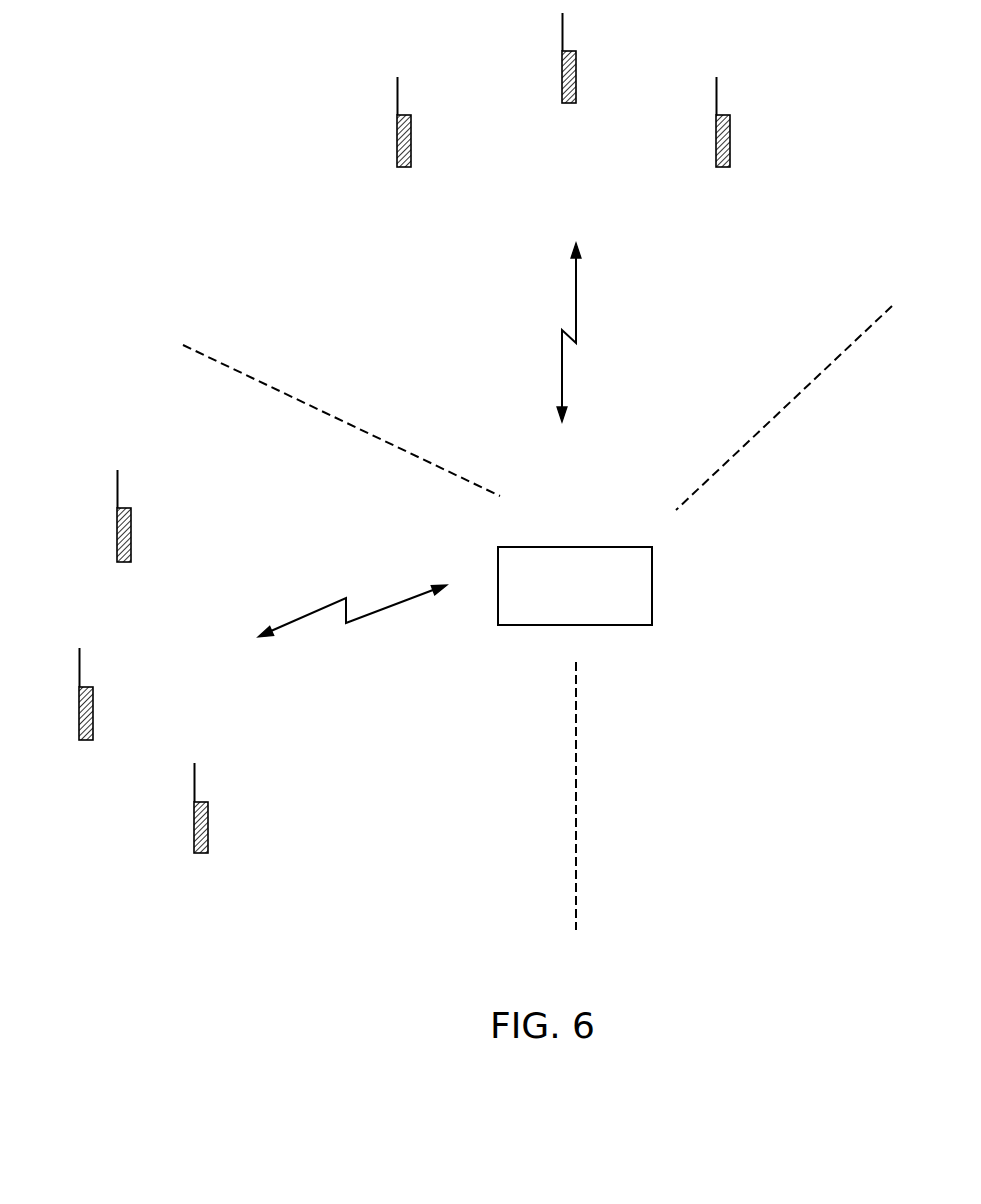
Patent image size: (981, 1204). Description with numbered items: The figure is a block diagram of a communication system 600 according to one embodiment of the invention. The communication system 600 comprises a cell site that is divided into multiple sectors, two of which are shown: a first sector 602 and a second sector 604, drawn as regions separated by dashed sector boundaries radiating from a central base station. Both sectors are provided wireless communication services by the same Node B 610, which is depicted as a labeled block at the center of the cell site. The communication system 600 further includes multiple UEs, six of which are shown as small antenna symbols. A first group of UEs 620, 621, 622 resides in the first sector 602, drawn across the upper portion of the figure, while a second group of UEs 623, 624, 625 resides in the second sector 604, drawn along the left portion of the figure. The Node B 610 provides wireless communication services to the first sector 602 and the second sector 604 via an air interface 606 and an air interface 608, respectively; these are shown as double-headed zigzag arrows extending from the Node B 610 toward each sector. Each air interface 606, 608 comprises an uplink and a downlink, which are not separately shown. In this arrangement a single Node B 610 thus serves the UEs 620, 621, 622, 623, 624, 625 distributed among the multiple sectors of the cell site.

The communication system 600 is at (904, 957).
The first sector 602 is at (735, 342).
The second sector 604 is at (314, 481).
The air interface 606 is at (576, 292).
The air interface 608 is at (383, 610).
The Node B 610 is at (652, 597).
The UE 620 is at (561, 77).
The UE 621 is at (396, 141).
The UE 622 is at (715, 141).
The UE 623 is at (116, 535).
The UE 624 is at (78, 713).
The UE 625 is at (193, 827).